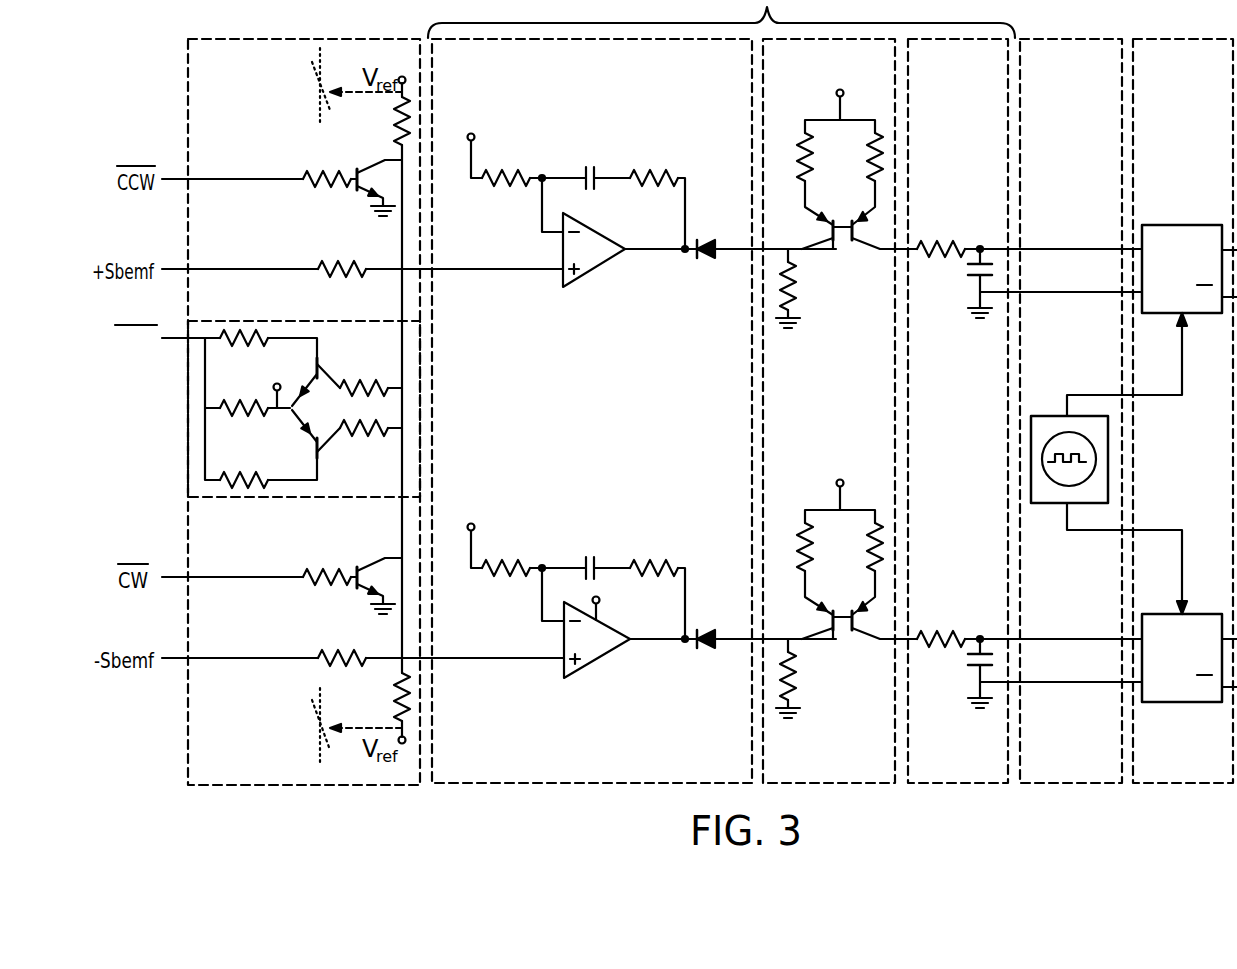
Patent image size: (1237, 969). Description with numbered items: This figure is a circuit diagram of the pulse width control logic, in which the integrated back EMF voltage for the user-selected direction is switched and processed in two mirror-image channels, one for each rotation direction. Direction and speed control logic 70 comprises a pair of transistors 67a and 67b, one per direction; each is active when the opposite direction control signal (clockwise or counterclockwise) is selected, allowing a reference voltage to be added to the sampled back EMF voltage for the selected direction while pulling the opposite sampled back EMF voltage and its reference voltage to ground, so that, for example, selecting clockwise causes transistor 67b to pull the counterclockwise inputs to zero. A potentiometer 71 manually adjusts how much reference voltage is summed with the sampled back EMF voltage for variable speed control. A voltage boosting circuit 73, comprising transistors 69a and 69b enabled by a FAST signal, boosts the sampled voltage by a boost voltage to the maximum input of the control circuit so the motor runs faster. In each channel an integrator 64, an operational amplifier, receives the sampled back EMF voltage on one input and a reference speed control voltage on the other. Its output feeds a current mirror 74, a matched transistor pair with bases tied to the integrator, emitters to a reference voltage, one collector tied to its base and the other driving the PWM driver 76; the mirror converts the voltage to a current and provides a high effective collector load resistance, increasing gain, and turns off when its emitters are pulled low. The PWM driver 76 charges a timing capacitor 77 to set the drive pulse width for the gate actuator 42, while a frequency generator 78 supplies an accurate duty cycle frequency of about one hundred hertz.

The direction and speed control logic 70 is at (251, 99).
The potentiometer 71 is at (316, 109).
The transistor 67a is at (356, 193).
The transistor 67b is at (353, 565).
The voltage boosting circuit 73 is at (246, 409).
The transistor 69a is at (322, 364).
The transistor 69b is at (322, 452).
The integrator 64 is at (606, 99).
The current mirror 74 is at (809, 99).
The pulse width modulation (PWM) driver 76 is at (972, 99).
The timing capacitor 77 is at (966, 268).
The frequency generator 78 is at (1085, 99).
The gate actuator 42 is at (1194, 99).